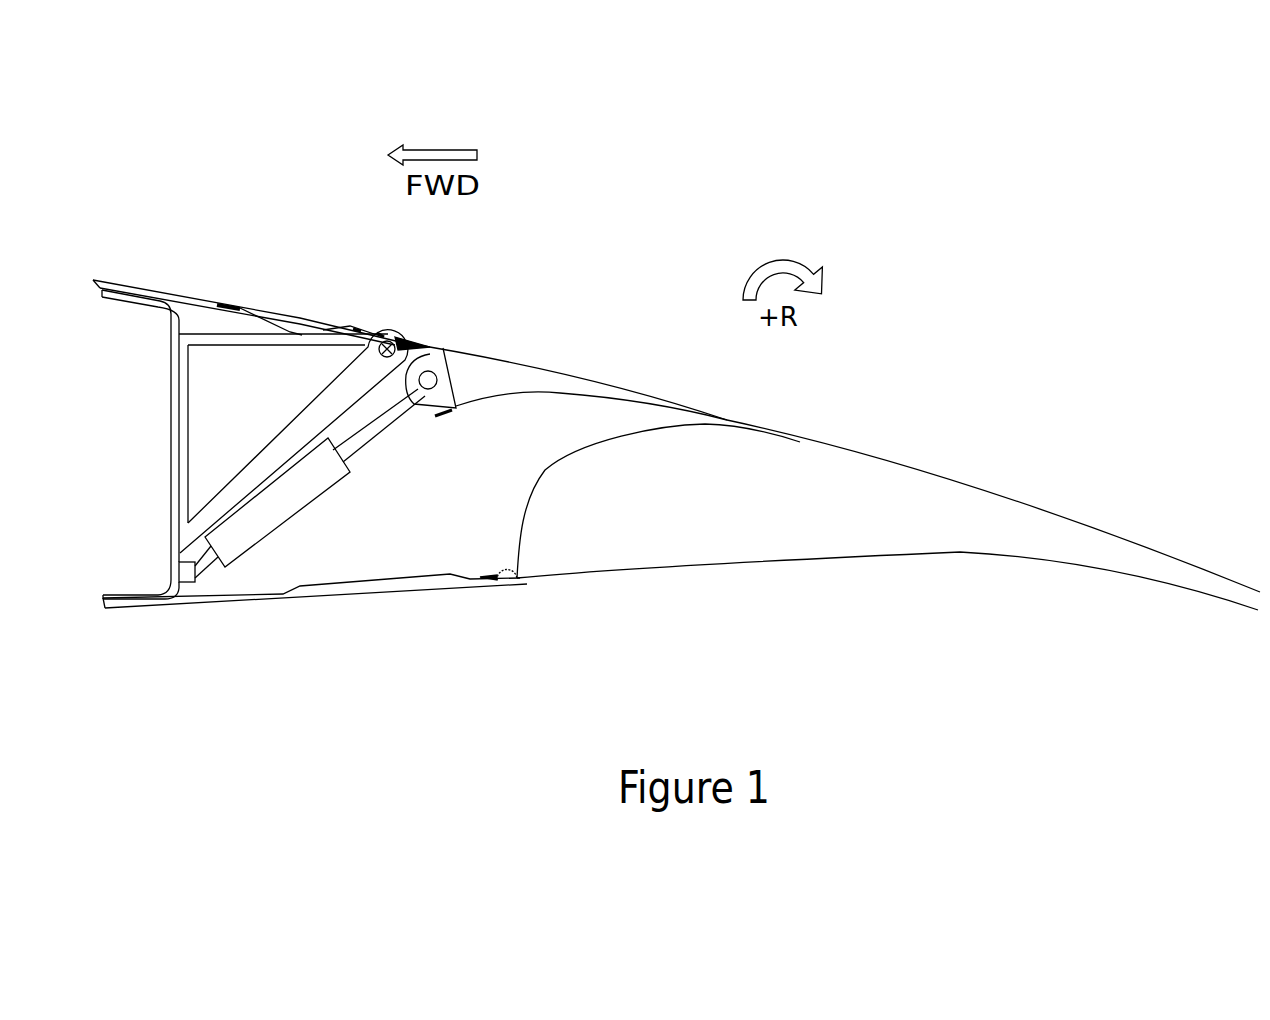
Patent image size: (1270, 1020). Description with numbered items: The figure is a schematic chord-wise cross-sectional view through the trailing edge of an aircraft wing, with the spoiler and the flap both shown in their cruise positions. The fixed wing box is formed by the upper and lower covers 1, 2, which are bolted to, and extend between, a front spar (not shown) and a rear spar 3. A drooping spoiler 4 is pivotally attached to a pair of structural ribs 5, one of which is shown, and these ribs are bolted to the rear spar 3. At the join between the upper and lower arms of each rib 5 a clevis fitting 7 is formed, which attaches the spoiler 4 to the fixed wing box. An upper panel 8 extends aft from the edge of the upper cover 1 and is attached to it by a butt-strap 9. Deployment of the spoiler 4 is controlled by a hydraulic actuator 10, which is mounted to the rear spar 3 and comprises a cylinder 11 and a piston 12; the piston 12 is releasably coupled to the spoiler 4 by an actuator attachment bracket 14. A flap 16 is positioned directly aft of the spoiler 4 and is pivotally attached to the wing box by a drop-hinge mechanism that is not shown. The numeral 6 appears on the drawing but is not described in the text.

The upper cover 1 is at (117, 280).
The lower cover 2 is at (127, 610).
The rear spar 3 is at (245, 406).
The drooping spoiler 4 is at (585, 380).
The structural rib 5 is at (223, 330).
The spar 6 is at (170, 425).
The clevis fitting 7 is at (403, 345).
The upper panel 8 is at (303, 322).
The butt-strap 9 is at (240, 308).
The hydraulic actuator 10 is at (292, 530).
The cylinder 11 is at (315, 498).
The piston 12 is at (382, 427).
The actuator attachment bracket 14 is at (430, 418).
The flap 16 is at (938, 478).